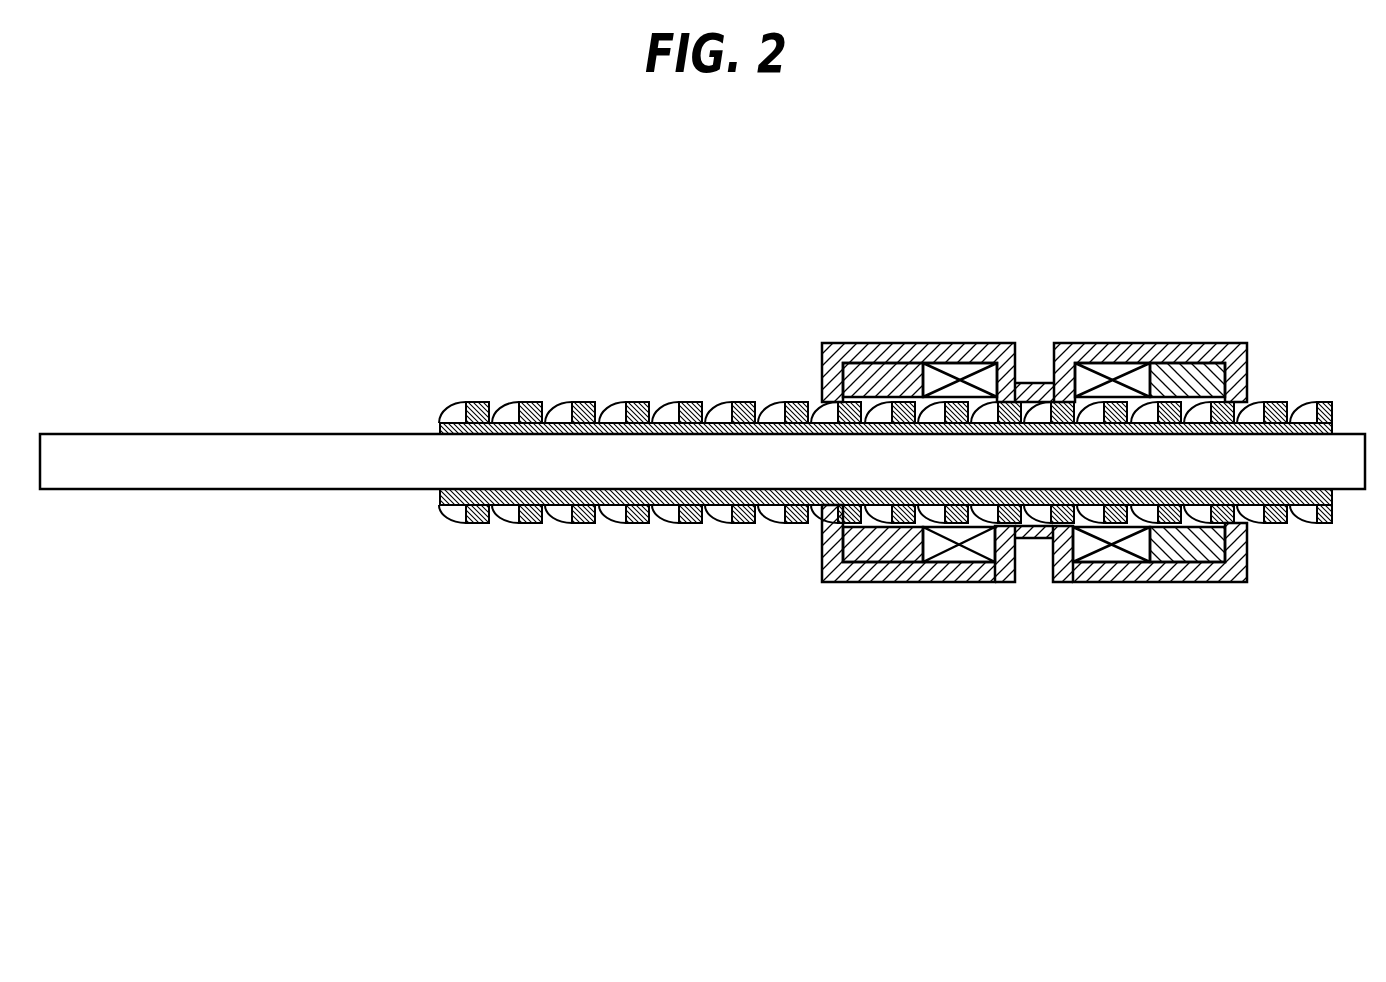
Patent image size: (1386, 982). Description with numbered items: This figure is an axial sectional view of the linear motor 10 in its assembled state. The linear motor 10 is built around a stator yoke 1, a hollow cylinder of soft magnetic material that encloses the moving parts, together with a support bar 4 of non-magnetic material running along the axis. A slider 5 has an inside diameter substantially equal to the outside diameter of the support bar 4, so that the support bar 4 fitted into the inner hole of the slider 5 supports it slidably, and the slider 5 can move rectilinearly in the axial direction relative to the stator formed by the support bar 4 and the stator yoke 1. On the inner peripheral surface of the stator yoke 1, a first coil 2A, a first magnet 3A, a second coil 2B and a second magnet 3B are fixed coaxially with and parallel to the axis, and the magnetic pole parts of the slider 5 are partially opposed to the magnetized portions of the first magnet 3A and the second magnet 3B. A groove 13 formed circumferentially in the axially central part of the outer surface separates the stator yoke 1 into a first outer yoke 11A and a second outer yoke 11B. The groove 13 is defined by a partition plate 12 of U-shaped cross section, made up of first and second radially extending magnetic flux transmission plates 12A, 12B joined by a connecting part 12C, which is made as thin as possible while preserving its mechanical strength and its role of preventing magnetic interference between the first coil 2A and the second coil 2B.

The stator yoke 1 is at (1238, 332).
The support bar 4 is at (1345, 472).
The slider 5 is at (692, 400).
The linear motor 10 is at (1089, 219).
The groove 13 is at (1032, 382).
The first coil 2A is at (963, 372).
The second coil 2B is at (1101, 372).
The first magnet 3A is at (881, 378).
The second magnet 3B is at (1197, 378).
The first outer yoke 11A is at (878, 582).
The second outer yoke 11B is at (1165, 582).
The partition plate 12 is at (933, 706).
The first magnetic flux transmission plate 12A is at (1008, 547).
The second magnetic flux transmission plate 12B is at (1062, 547).
The connecting part 12C is at (1038, 533).